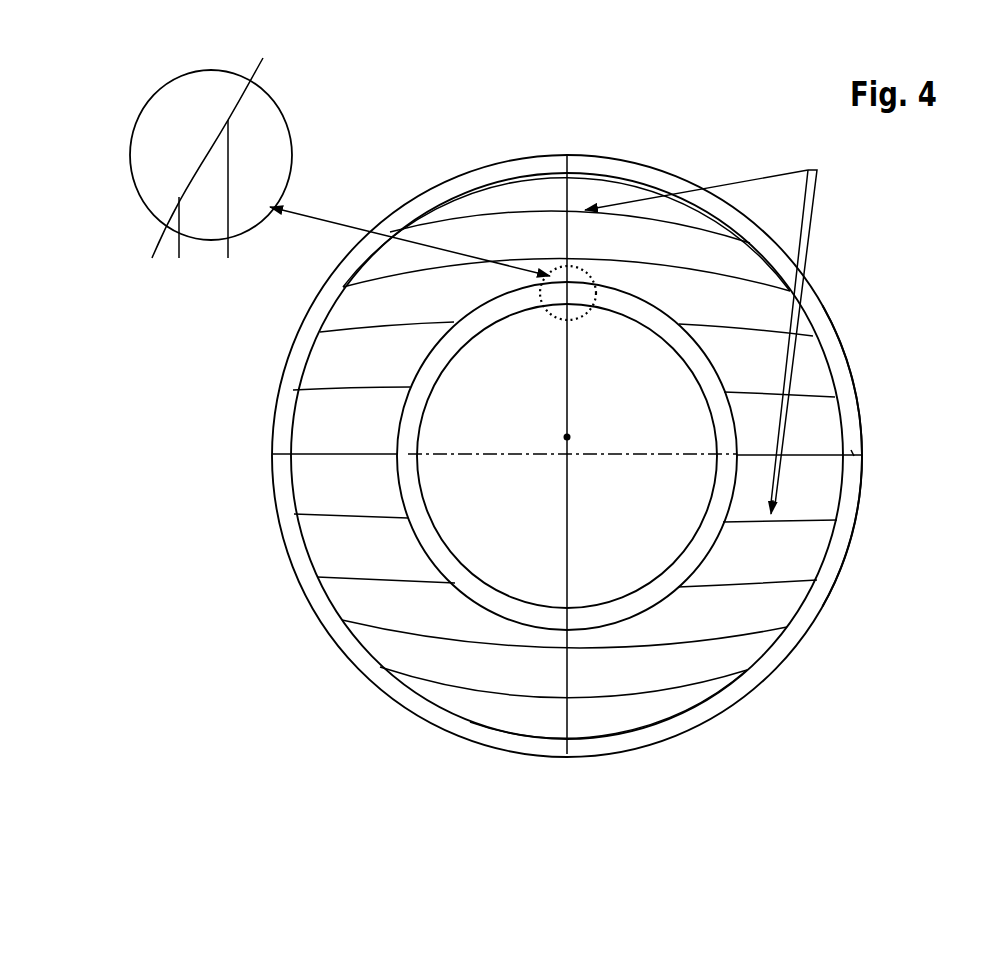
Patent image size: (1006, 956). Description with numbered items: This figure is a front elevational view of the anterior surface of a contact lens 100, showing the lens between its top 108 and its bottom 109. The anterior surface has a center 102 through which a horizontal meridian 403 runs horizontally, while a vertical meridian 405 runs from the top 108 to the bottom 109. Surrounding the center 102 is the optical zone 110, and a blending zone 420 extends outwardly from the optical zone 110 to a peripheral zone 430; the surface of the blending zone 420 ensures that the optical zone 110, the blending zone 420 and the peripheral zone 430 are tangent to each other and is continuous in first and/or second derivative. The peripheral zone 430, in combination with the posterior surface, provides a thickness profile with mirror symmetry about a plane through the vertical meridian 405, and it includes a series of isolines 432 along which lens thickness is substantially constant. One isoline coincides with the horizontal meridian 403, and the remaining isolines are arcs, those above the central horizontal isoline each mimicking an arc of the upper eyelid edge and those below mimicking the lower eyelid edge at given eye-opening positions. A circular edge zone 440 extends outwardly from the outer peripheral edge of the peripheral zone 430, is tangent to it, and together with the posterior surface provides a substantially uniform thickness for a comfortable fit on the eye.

The contact lens 100 is at (755, 66).
The center 102 is at (550, 455).
The top 108 is at (568, 153).
The bottom 109 is at (568, 763).
The optical zone 110 is at (474, 531).
The horizontal meridian 403 is at (851, 452).
The vertical meridian 405 is at (580, 157).
The blending zone 420 is at (463, 584).
The peripheral zone 430 is at (739, 613).
The peripheral zone lines 432 is at (812, 170).
The circular edge zone 440 is at (848, 506).